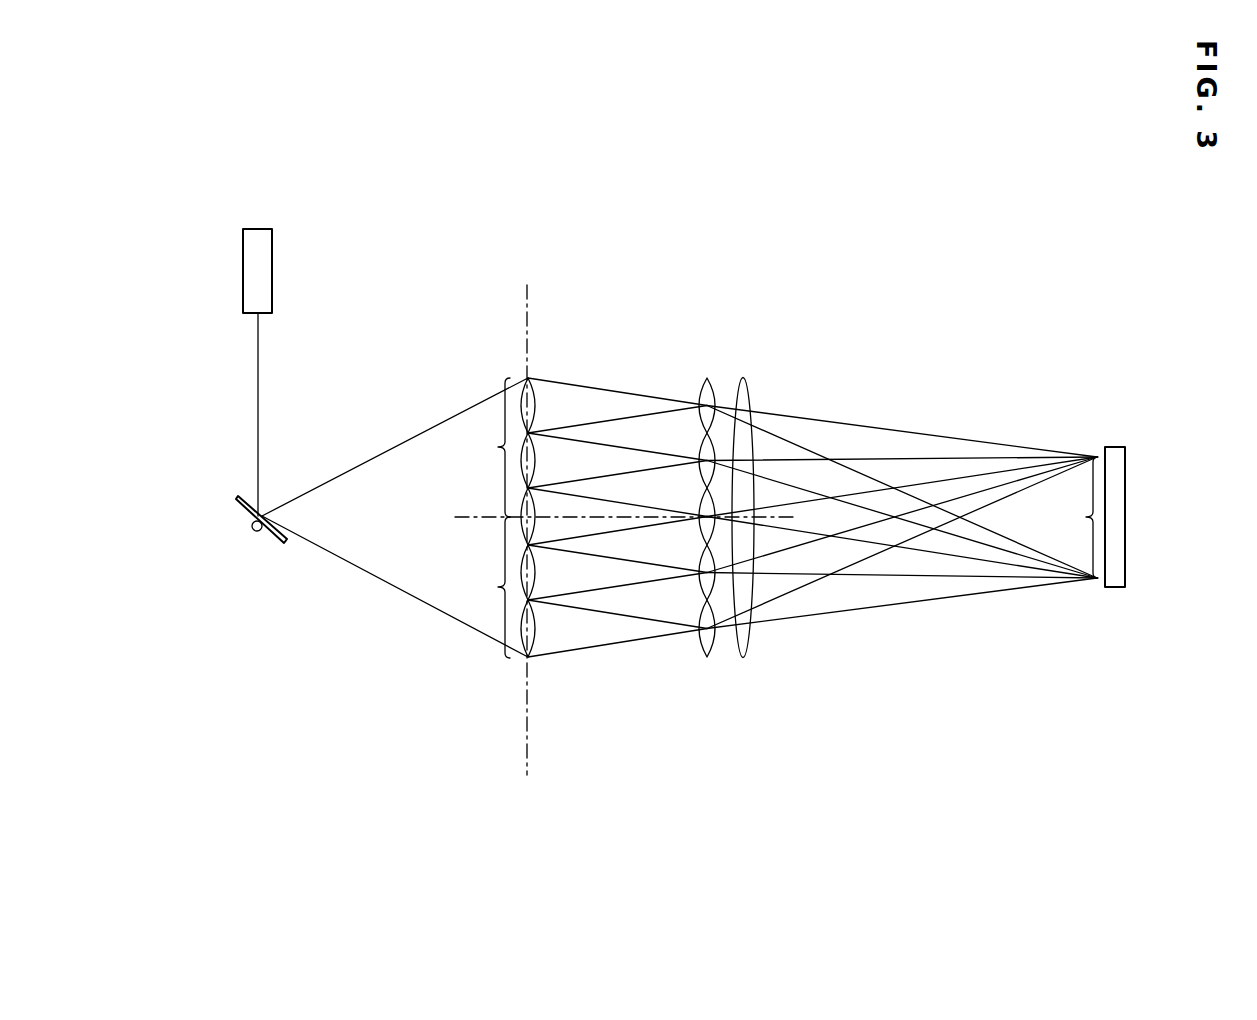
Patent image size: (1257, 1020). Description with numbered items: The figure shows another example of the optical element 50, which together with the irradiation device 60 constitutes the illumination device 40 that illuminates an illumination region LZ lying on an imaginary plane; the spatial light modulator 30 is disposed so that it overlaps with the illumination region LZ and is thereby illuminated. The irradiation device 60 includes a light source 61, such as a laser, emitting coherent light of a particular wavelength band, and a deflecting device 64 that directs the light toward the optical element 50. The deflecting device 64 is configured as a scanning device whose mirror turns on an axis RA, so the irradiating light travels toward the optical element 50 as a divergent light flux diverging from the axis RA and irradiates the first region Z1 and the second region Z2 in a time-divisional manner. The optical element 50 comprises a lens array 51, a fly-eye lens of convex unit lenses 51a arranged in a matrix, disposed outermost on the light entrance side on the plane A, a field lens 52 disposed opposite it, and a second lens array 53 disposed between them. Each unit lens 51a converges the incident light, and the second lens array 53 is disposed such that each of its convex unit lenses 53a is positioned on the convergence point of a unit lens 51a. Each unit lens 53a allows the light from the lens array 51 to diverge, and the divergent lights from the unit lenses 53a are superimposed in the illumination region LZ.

The spatial light modulator 30 is at (1091, 469).
The illumination device 40 is at (615, 235).
The optical element 50 is at (753, 316).
The lens array 51 is at (537, 544).
The unit lens 51a is at (538, 455).
The field lens 52 is at (747, 675).
The second lens array 53 is at (680, 549).
The unit lens of second lens array 53a is at (699, 455).
The irradiation device 60 is at (290, 398).
The light source 61 is at (265, 272).
The deflecting device 64 is at (224, 550).
The axis RA is at (256, 532).
The plane A is at (530, 737).
The first region Z1 is at (486, 447).
The second region Z2 is at (486, 587).
The illumination region LZ is at (1072, 517).